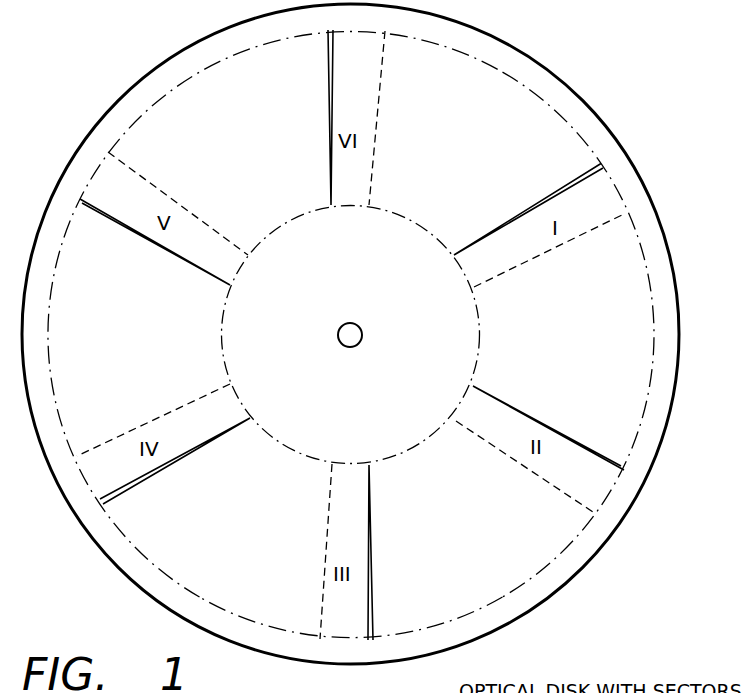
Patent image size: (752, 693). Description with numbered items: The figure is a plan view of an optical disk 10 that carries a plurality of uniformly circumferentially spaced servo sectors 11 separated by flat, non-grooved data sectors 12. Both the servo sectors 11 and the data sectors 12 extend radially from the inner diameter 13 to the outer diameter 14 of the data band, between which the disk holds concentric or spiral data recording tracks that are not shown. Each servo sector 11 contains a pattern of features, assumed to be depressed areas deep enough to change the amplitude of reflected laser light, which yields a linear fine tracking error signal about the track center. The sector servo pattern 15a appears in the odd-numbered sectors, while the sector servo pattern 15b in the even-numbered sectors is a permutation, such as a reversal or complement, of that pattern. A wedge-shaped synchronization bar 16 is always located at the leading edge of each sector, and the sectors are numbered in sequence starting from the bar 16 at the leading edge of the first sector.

The optical disk 10 is at (659, 217).
The servo sector 11 is at (333, 632).
The data sector 12 is at (200, 581).
The inner diameter 13 is at (418, 444).
The outer diameter 14 is at (501, 598).
The sector servo pattern 15a is at (196, 226).
The sector servo pattern 15b is at (380, 140).
The synchronization bar 16 is at (556, 431).